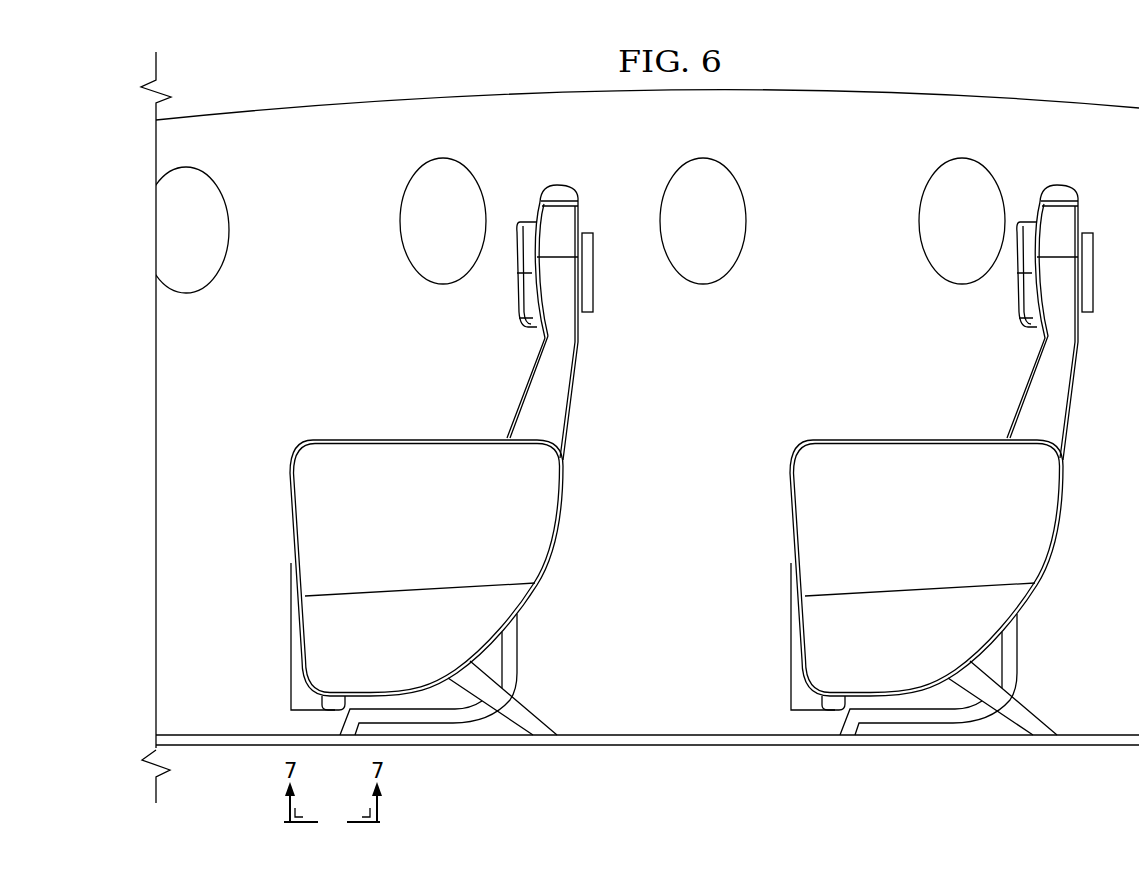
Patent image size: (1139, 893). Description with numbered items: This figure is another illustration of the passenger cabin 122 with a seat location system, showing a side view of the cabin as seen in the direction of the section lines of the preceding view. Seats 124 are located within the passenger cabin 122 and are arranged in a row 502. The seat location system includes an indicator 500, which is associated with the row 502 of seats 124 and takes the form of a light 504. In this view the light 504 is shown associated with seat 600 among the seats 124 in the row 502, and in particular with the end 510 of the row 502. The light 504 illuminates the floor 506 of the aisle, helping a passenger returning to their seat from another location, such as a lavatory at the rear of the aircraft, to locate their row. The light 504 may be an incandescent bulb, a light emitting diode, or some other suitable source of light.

The passenger cabin 122 is at (465, 93).
The seats 124 is at (529, 178).
The end of row 510 is at (562, 500).
The seat 600 is at (315, 440).
The light 504 is at (325, 702).
The indicator 500 is at (317, 714).
The floor 506 is at (638, 733).
The row 502 is at (675, 716).